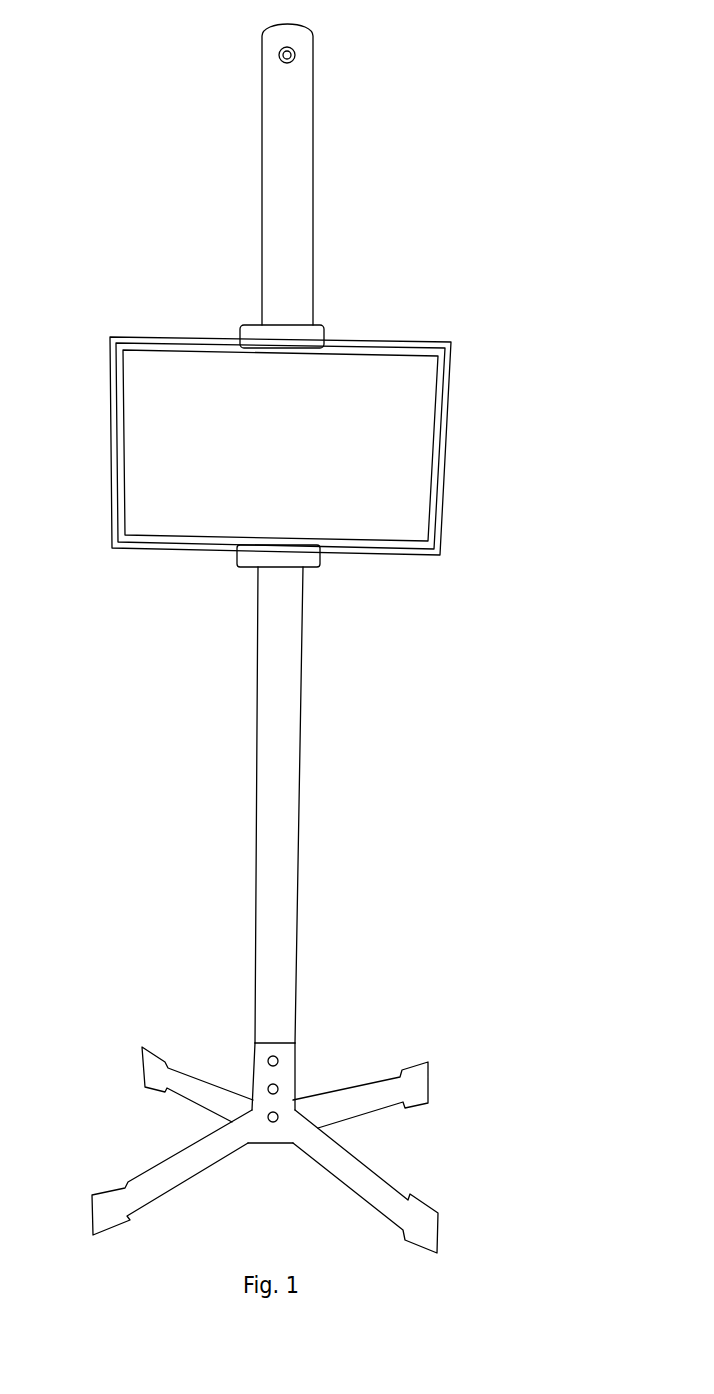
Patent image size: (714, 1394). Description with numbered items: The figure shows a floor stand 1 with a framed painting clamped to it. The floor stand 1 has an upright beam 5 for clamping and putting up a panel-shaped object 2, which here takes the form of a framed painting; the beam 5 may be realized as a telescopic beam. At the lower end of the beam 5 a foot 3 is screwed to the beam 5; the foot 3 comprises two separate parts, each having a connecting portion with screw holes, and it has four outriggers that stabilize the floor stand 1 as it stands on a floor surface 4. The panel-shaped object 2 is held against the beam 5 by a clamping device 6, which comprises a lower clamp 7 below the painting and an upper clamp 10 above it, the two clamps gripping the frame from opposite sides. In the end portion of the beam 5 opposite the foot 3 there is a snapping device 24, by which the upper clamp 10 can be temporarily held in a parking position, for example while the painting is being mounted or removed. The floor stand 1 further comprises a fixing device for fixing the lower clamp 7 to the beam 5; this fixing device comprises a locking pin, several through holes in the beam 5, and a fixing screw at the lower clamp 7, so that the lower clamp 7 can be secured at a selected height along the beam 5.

The floor stand 1 is at (104, 98).
The panel-shaped object 2 is at (285, 450).
The foot 3 is at (443, 1023).
The floor surface 4 is at (281, 1226).
The beam 5 is at (271, 753).
The clamping device 6 is at (345, 335).
The lower clamp 7 is at (216, 575).
The upper clamp 10 is at (229, 297).
The snapping device 24 is at (310, 64).